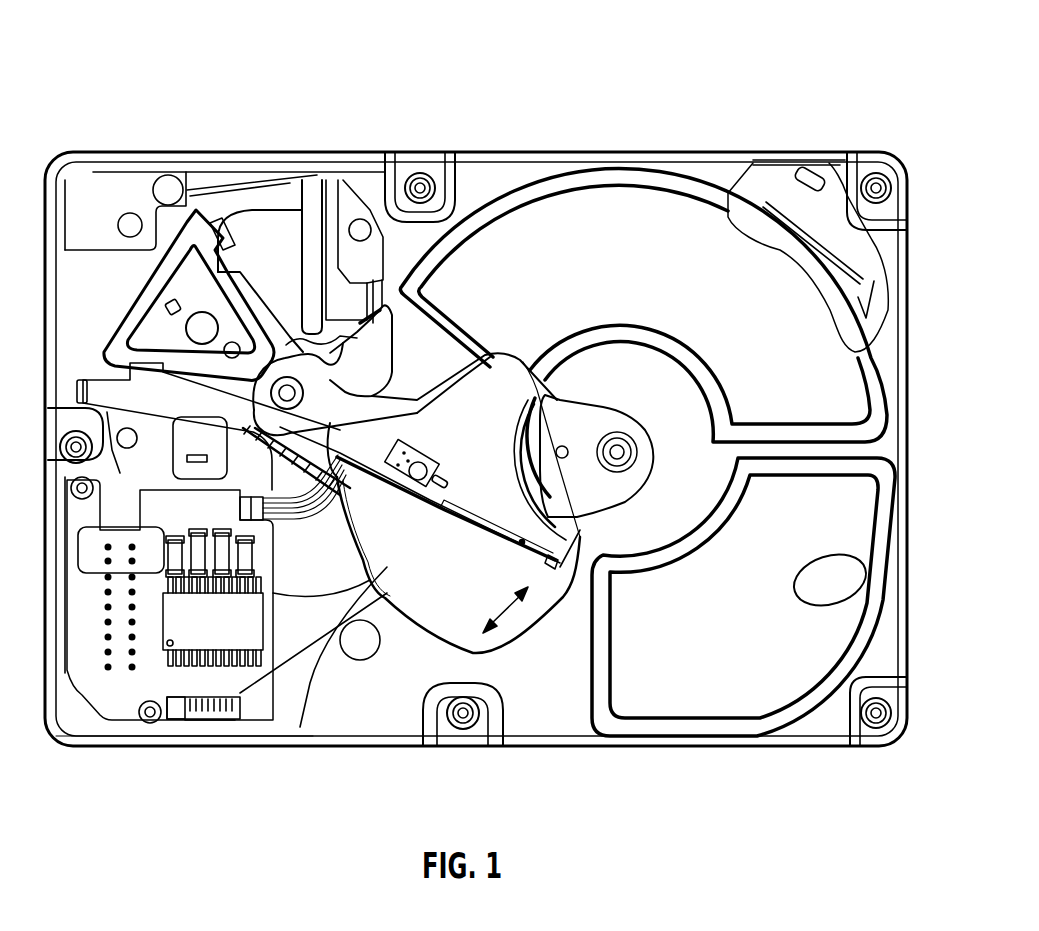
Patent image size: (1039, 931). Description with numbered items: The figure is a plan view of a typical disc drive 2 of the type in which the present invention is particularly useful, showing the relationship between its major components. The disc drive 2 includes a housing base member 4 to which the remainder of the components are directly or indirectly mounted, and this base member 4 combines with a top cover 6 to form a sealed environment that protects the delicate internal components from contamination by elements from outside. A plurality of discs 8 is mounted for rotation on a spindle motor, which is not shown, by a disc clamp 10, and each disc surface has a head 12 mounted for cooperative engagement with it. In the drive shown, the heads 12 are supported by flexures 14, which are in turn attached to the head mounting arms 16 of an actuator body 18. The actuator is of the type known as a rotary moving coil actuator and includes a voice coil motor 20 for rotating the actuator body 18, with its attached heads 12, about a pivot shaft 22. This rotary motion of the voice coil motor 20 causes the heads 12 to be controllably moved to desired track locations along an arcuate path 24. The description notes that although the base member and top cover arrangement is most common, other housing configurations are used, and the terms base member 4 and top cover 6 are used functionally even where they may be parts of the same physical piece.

The disc drive 2 is at (505, 104).
The housing base member 4 is at (170, 746).
The top cover 6 is at (900, 452).
The discs 8 is at (430, 600).
The disc clamp 10 is at (620, 495).
The head 12 is at (551, 558).
The flexures 14 is at (473, 512).
The head mounting arms 16 is at (367, 455).
The actuator body 18 is at (362, 368).
The voice coil motor 20 is at (252, 210).
The pivot shaft 22 is at (296, 393).
The arcuate path 24 is at (511, 612).